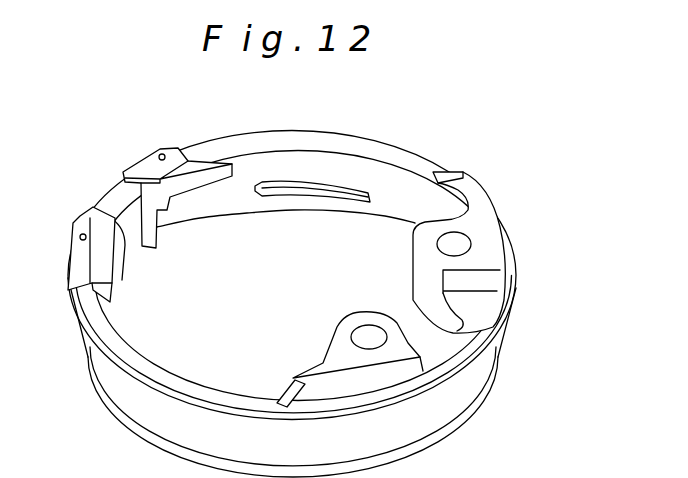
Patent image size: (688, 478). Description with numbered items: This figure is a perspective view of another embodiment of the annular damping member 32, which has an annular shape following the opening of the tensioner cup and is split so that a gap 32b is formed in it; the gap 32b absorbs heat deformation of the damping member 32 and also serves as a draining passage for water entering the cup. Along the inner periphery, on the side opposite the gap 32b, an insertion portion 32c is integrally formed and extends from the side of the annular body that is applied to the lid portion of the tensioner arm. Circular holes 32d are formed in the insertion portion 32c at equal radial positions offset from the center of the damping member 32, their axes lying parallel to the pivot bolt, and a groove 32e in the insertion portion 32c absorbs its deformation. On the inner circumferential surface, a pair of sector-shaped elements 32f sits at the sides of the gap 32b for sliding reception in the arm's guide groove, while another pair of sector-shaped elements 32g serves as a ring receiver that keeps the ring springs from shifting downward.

The damping member 32 is at (413, 132).
The gap 32b is at (118, 208).
The insertion portion 32c is at (485, 230).
The circular holes 32d is at (450, 243).
The groove 32e is at (447, 322).
The sector-shaped elements 32f is at (200, 182).
The sector-shaped elements 32g is at (313, 195).